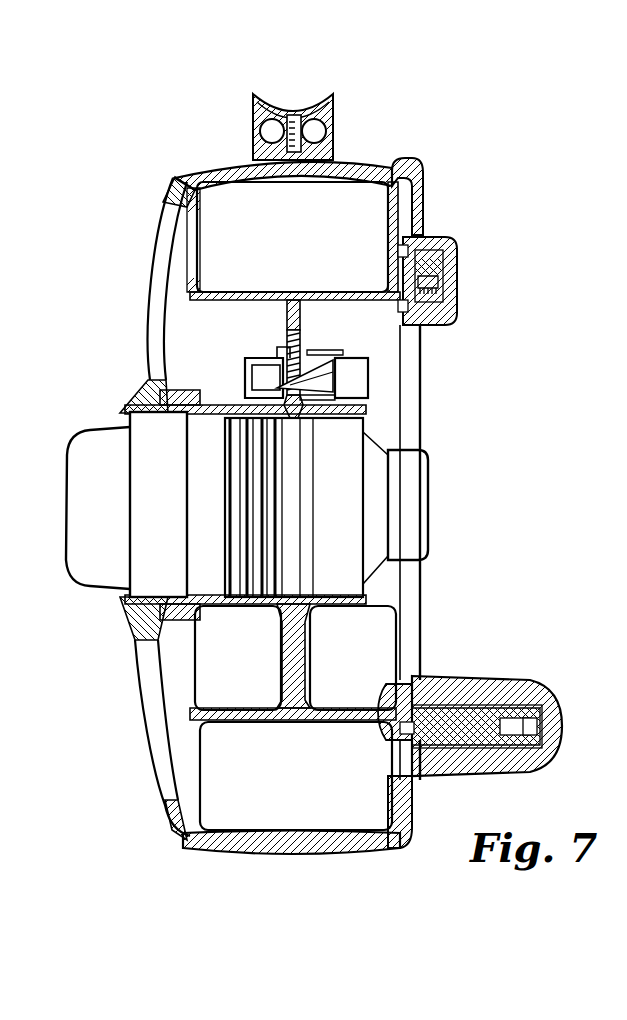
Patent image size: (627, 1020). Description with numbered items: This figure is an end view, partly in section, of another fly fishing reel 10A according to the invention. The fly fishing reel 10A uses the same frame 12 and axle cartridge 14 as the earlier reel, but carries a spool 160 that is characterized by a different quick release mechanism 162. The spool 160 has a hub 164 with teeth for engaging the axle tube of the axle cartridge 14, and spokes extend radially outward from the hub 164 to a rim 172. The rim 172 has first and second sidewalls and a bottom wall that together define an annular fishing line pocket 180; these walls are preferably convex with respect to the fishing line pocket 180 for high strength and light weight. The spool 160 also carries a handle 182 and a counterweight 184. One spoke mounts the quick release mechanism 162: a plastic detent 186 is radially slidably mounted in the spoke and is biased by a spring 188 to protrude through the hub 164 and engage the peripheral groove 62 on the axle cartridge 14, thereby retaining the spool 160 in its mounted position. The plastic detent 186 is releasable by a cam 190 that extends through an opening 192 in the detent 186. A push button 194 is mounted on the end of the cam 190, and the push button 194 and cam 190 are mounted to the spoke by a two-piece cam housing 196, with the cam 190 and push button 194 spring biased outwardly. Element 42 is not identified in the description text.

The fly fishing reel 10A is at (125, 182).
The frame 12 is at (173, 178).
The axle cartridge 14 is at (432, 488).
The knob 42 is at (98, 575).
The peripheral groove 62 is at (290, 535).
The spool 160 is at (427, 213).
The quick release mechanism 162 is at (377, 362).
The hub 164 is at (336, 606).
The rim 172 is at (207, 806).
The fishing line pocket 180 is at (310, 784).
The handle 182 is at (500, 773).
The counterweight 184 is at (455, 262).
The plastic detent 186 is at (290, 420).
The spring 188 is at (290, 345).
The cam 190 is at (318, 380).
The opening 192 is at (250, 373).
The push button 194 is at (370, 378).
The two-piece cam housing 196 is at (305, 340).